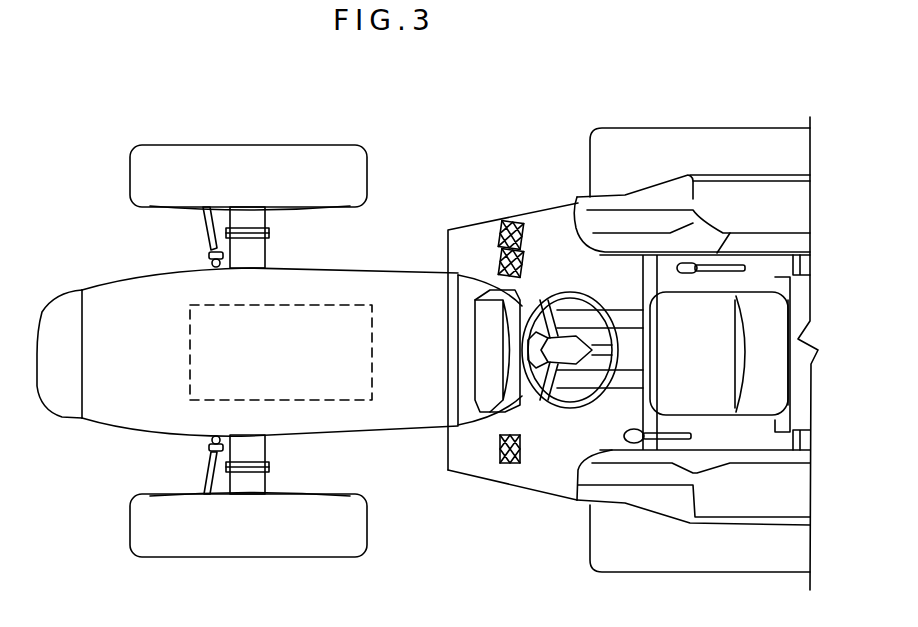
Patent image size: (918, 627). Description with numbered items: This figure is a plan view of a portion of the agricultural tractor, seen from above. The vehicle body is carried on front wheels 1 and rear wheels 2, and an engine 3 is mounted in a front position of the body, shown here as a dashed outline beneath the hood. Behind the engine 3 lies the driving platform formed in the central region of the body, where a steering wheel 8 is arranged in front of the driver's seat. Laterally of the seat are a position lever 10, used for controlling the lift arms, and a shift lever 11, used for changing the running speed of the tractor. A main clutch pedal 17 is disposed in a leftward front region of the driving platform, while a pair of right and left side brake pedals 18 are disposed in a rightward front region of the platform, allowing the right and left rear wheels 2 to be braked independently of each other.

The front wheels 1 is at (297, 145).
The rear wheels 2 is at (717, 128).
The engine 3 is at (190, 350).
The steering wheel 8 is at (562, 292).
The position lever 10 is at (708, 273).
The shift lever 11 is at (625, 437).
The main clutch pedal 17 is at (497, 463).
The side brake pedals 18 is at (503, 258).